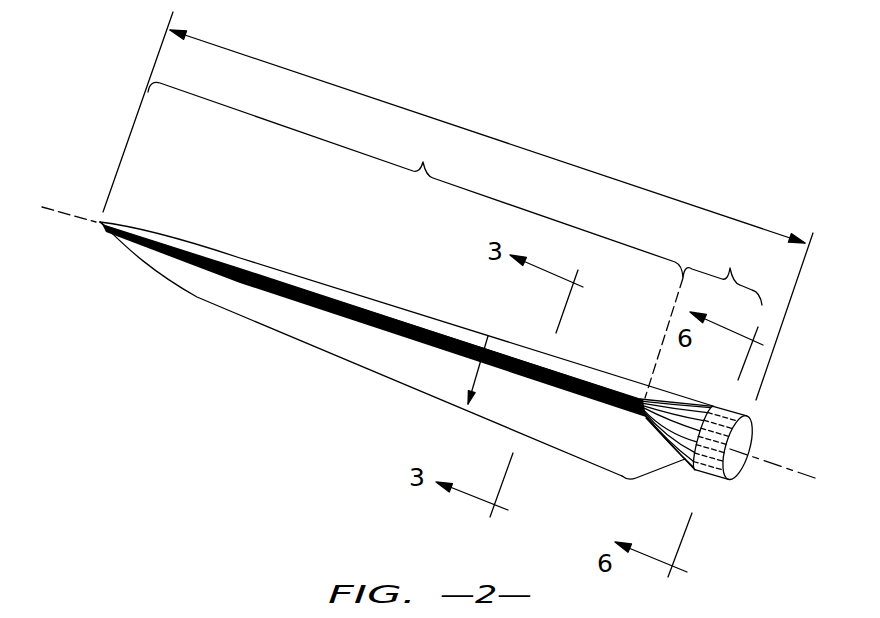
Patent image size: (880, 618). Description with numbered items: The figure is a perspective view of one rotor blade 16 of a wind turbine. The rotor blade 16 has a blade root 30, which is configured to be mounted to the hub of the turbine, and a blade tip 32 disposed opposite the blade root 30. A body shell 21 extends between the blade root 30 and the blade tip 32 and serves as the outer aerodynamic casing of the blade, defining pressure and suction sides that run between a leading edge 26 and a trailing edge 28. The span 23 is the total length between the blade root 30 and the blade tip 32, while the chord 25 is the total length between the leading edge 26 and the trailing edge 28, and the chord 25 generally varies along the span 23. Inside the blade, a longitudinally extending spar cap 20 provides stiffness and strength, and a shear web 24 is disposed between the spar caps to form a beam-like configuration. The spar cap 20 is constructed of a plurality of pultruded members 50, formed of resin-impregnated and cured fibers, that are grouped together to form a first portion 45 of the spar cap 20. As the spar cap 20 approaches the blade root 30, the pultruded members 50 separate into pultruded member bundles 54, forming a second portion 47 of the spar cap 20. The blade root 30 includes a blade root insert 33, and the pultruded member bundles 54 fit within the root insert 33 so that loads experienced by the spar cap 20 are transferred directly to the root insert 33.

The rotor blade 16 is at (433, 334).
The spar cap 20 is at (378, 330).
The body shell 21 is at (305, 317).
The span 23 is at (527, 150).
The shear web 24 is at (85, 226).
The chord 25 is at (475, 370).
The leading edge 26 is at (572, 361).
The trailing edge 28 is at (592, 467).
The blade root 30 is at (705, 470).
The blade tip 32 is at (100, 223).
The blade root insert 33 is at (740, 405).
The first portion of the spar cap 45 is at (415, 179).
The second portion of the spar cap 47 is at (703, 318).
The pultruded members 50 is at (280, 279).
The pultruded member bundles 54 is at (668, 453).